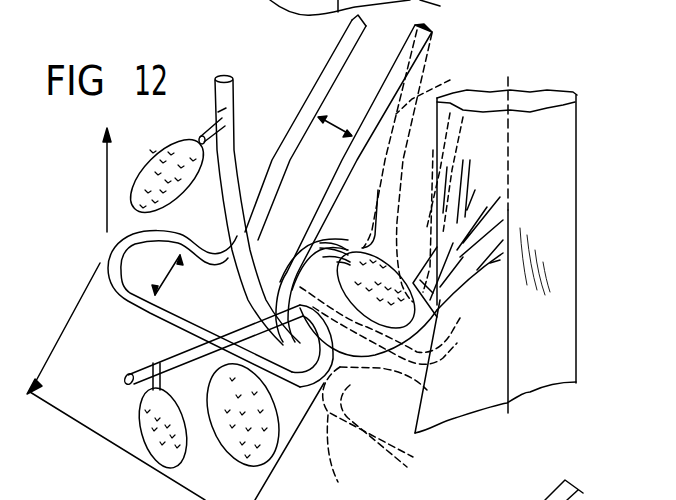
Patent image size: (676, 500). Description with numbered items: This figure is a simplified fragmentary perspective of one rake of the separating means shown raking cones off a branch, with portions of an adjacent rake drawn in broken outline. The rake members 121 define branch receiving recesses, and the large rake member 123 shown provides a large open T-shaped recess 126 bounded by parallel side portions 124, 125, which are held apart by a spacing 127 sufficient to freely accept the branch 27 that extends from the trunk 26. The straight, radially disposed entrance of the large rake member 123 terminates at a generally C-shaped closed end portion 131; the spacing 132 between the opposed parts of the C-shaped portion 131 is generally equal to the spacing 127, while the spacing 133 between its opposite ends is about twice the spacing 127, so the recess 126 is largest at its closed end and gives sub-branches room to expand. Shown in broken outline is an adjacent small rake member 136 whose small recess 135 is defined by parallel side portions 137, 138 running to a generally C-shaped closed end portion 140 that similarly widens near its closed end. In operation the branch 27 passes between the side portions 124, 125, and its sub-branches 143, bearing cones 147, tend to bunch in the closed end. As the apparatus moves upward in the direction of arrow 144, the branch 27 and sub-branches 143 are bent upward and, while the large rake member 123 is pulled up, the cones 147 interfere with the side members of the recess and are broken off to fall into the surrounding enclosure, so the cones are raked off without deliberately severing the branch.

The trunk 26 is at (550, 138).
The branch 27 is at (355, 378).
The rake members 121 is at (282, 64).
The large rake member 123 is at (222, 110).
The side portion 124 is at (317, 117).
The side portion 125 is at (355, 155).
The recess 126 is at (283, 208).
The spacing 127 is at (331, 128).
The C-shaped closed end portion 131 is at (210, 352).
The spacing 132 is at (173, 275).
The spacing 133 is at (143, 462).
The small recess 135 is at (427, 172).
The small rake member 136 is at (455, 168).
The side portion 137 is at (440, 88).
The side portion 138 is at (462, 132).
The closed end portion 140 is at (427, 343).
The sub-branch 143 is at (307, 282).
The arrow 144 is at (107, 162).
The cone 147 is at (238, 438).